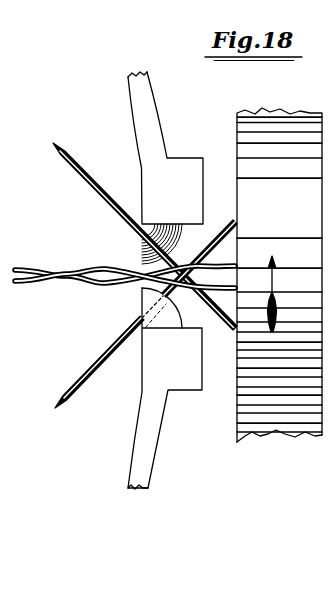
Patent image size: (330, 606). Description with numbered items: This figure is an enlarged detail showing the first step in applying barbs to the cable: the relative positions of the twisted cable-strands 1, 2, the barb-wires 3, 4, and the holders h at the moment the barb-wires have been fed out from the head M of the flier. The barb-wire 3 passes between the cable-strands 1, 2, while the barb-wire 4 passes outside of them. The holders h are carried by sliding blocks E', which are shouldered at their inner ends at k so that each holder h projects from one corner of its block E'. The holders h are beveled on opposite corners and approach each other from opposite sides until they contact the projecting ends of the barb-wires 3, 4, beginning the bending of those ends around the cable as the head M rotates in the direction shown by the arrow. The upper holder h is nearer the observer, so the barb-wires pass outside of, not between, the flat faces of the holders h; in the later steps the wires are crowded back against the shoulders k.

The cable-strand 1 is at (20, 270).
The cable-strand 2 is at (26, 282).
The barb-wire 3 is at (145, 238).
The barb-wire 4 is at (146, 308).
The holder h is at (166, 275).
The shoulder k is at (200, 245).
The sliding block E' is at (165, 280).
The head of the flier M is at (279, 275).